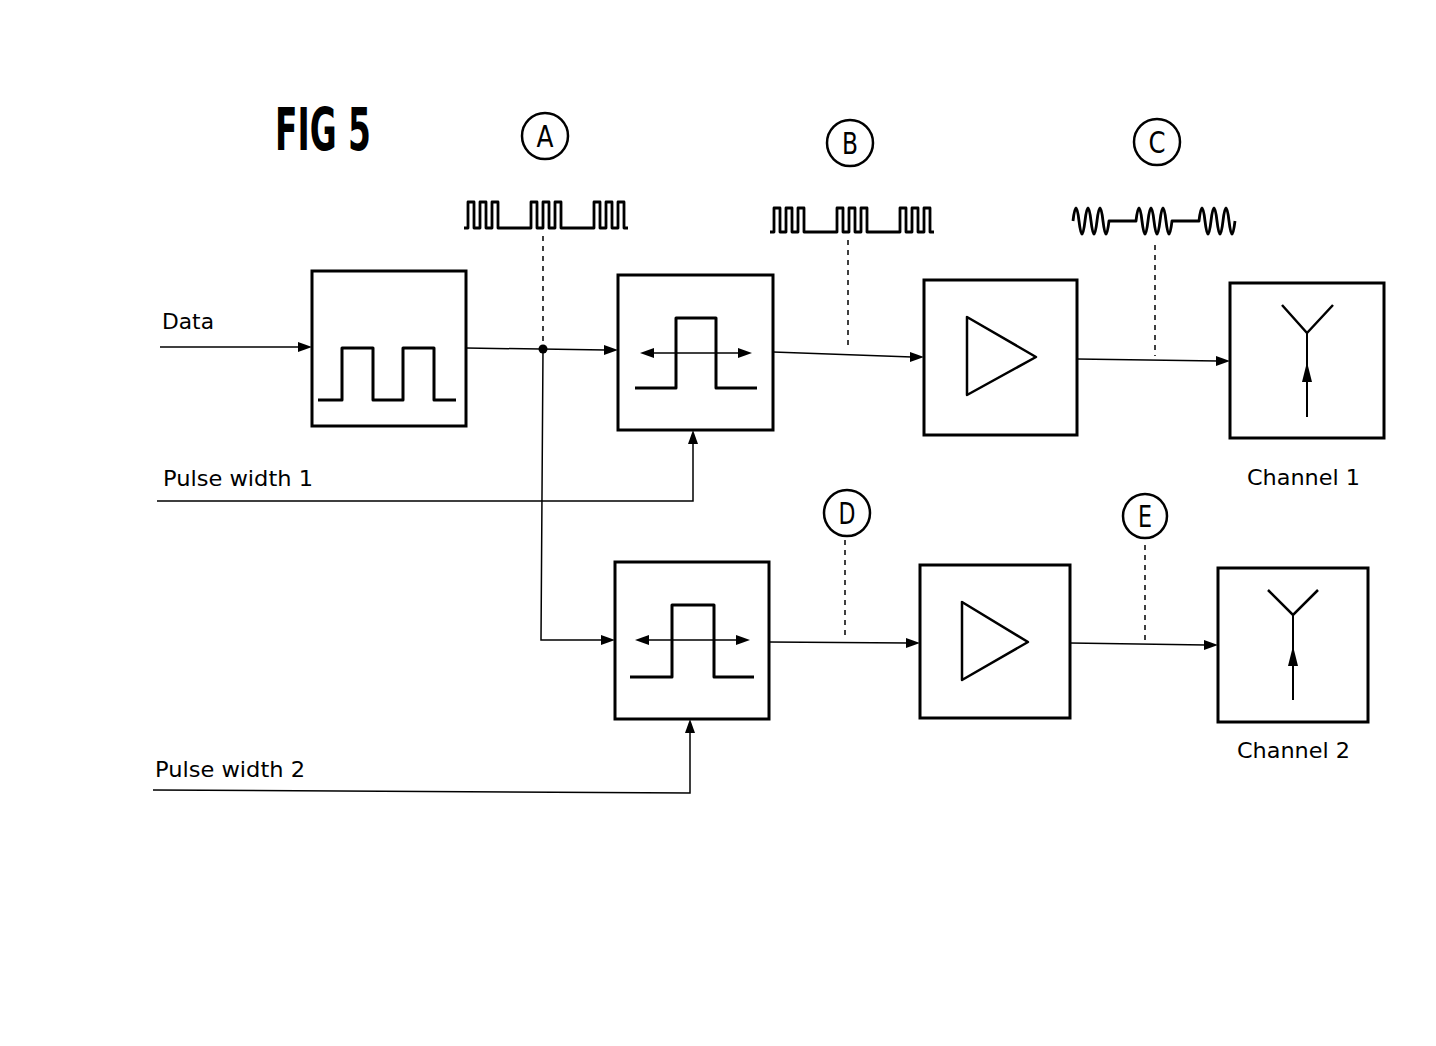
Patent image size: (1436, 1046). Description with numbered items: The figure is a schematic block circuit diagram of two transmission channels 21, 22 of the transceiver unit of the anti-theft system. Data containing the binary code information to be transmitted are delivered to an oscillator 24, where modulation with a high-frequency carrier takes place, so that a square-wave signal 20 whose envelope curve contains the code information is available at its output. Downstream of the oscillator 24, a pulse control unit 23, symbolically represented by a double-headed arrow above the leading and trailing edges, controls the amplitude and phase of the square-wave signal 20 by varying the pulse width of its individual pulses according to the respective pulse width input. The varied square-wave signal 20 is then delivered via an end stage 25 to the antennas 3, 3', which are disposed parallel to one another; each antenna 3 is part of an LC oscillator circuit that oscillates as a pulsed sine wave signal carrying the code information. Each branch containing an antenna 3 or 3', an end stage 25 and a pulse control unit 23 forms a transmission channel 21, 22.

The square-wave signal 20 is at (607, 173).
The transmission channel 21 is at (1312, 242).
The transmission channel 22 is at (1313, 785).
The pulse control unit 23 is at (736, 422).
The oscillator 24 is at (389, 417).
The end stage 25 is at (1005, 427).
The antenna 3 is at (1358, 361).
The antenna 3' is at (1346, 645).